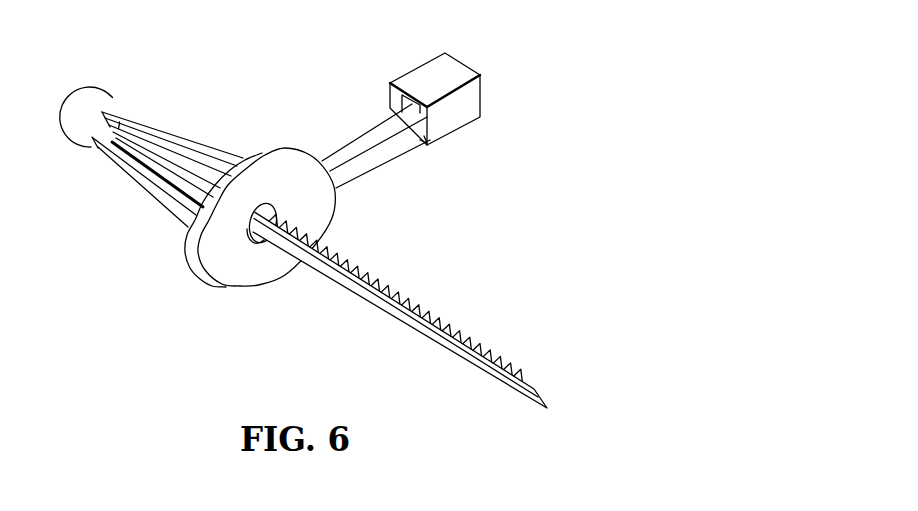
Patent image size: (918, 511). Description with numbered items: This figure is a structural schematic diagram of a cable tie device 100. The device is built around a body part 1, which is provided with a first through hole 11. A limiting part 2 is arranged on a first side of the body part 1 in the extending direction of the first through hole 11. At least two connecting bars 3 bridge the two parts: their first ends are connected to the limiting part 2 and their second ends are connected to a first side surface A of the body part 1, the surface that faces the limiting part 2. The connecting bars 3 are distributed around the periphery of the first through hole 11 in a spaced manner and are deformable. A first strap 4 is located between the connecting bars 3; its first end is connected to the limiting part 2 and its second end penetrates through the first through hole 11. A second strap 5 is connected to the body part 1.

The cable tie device 100 is at (132, 238).
The body part 1 is at (290, 170).
The limiting part 2 is at (82, 115).
The connecting bars 3 is at (188, 128).
The first strap 4 is at (447, 348).
The second strap 5 is at (383, 150).
The first through hole 11 is at (261, 244).
The first side surface A is at (258, 154).